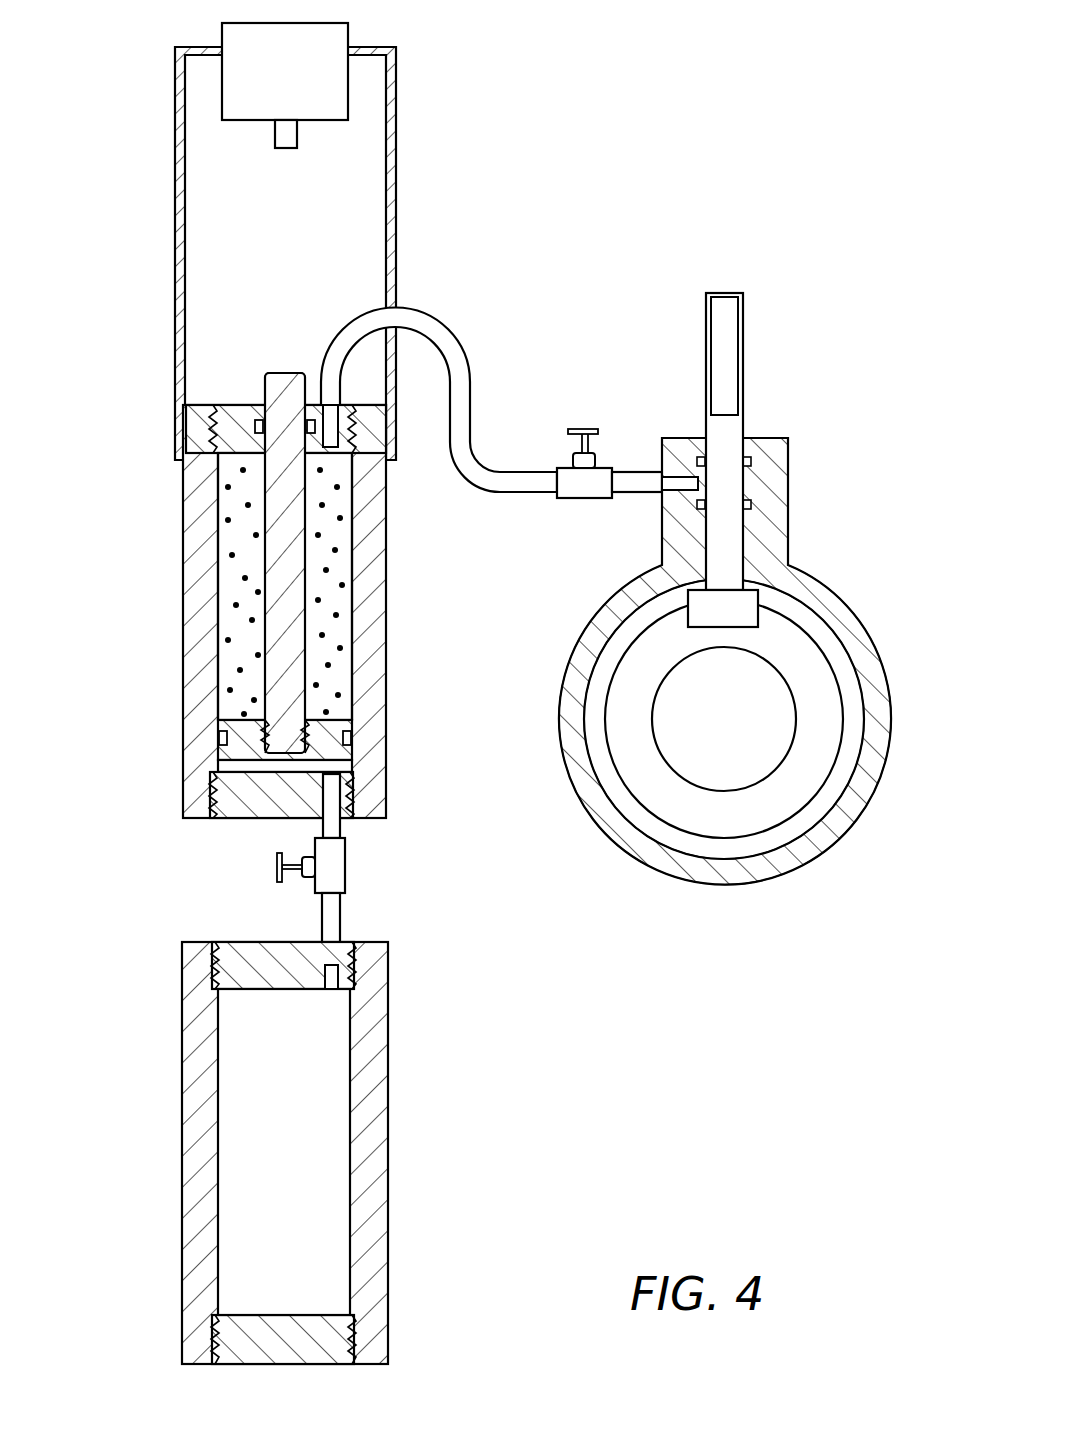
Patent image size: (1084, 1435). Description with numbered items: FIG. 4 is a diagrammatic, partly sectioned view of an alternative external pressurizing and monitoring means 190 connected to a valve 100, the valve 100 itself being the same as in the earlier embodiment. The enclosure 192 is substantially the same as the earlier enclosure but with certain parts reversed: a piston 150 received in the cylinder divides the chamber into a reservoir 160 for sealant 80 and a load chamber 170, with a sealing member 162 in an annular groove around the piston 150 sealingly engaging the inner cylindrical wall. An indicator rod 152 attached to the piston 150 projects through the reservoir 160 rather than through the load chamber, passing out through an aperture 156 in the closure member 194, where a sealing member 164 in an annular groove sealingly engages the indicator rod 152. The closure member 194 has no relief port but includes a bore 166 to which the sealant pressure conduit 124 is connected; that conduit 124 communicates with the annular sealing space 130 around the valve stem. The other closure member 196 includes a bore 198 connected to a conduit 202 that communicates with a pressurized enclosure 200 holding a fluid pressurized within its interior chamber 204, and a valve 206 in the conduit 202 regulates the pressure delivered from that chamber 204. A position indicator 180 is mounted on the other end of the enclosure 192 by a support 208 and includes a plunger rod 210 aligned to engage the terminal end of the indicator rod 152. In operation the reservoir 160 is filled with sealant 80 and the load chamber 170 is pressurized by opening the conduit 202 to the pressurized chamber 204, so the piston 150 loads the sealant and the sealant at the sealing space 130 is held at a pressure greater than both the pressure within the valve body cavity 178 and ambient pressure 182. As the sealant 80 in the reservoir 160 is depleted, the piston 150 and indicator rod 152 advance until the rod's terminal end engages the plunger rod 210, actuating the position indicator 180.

The sealant 80 is at (233, 580).
The valve 100 is at (828, 548).
The sealant pressure conduit 124 is at (485, 477).
The annular sealing space 130 is at (745, 487).
The piston 150 is at (225, 725).
The indicator rod 152 is at (275, 648).
The aperture 156 is at (222, 417).
The reservoir 160 is at (233, 525).
The sealing member 162 is at (353, 740).
The sealing member 164 is at (222, 458).
The bore 166 is at (343, 414).
The load chamber 170 is at (226, 768).
The valve body cavity 178 is at (805, 627).
The position indicator 180 is at (341, 35).
The ambient pressure 182 is at (820, 378).
The pressurizing and monitoring means 190 is at (448, 256).
The enclosure 192 is at (370, 655).
The closure member 194 is at (213, 437).
The closure member 196 is at (245, 808).
The bore 198 is at (342, 807).
The pressurized enclosure 200 is at (379, 1184).
The conduit 202 is at (340, 923).
The interior chamber 204 is at (325, 1116).
The valve 206 is at (340, 868).
The support 208 is at (392, 132).
The plunger rod 210 is at (278, 137).